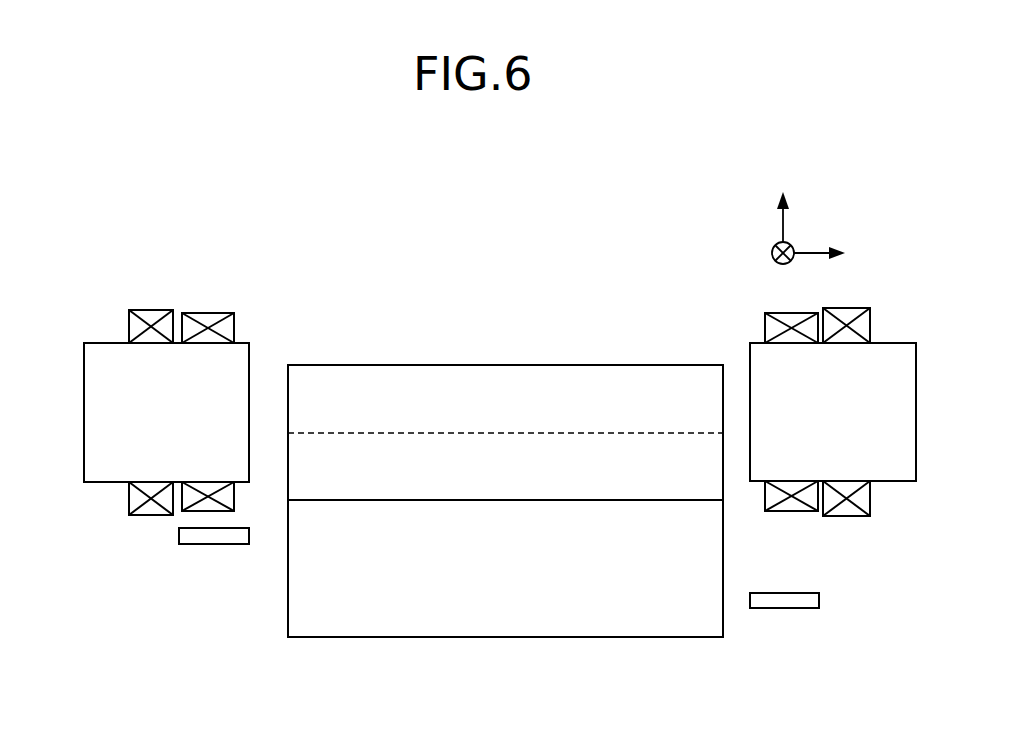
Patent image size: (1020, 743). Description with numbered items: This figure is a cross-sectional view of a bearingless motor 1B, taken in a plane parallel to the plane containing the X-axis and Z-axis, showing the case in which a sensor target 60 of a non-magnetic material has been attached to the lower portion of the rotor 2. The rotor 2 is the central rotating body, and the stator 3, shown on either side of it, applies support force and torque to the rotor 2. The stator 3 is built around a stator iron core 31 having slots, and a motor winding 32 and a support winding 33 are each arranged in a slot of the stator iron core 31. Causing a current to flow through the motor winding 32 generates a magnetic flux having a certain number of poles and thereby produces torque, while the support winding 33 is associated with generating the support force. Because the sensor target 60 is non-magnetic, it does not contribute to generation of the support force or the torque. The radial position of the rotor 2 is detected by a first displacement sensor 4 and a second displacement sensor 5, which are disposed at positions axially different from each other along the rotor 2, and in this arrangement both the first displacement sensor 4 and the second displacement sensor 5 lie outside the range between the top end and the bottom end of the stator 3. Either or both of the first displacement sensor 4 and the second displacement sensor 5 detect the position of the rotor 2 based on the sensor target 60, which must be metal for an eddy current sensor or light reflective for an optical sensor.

The bearingless motor 1B is at (550, 219).
The rotor 2 is at (505, 503).
The sensor target 60 is at (612, 637).
The stator 3 is at (138, 398).
The stator iron core 31 is at (127, 373).
The motor winding 32 is at (208, 313).
The support winding 33 is at (157, 310).
The first displacement sensor 4 is at (215, 544).
The second displacement sensor 5 is at (788, 608).